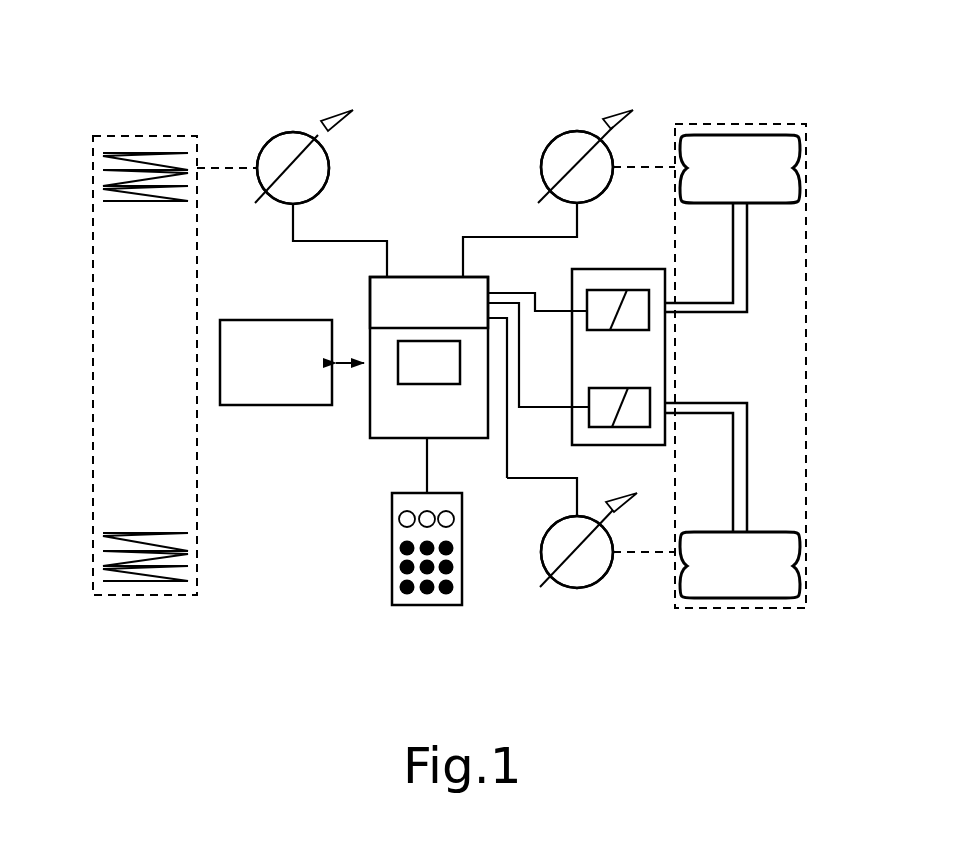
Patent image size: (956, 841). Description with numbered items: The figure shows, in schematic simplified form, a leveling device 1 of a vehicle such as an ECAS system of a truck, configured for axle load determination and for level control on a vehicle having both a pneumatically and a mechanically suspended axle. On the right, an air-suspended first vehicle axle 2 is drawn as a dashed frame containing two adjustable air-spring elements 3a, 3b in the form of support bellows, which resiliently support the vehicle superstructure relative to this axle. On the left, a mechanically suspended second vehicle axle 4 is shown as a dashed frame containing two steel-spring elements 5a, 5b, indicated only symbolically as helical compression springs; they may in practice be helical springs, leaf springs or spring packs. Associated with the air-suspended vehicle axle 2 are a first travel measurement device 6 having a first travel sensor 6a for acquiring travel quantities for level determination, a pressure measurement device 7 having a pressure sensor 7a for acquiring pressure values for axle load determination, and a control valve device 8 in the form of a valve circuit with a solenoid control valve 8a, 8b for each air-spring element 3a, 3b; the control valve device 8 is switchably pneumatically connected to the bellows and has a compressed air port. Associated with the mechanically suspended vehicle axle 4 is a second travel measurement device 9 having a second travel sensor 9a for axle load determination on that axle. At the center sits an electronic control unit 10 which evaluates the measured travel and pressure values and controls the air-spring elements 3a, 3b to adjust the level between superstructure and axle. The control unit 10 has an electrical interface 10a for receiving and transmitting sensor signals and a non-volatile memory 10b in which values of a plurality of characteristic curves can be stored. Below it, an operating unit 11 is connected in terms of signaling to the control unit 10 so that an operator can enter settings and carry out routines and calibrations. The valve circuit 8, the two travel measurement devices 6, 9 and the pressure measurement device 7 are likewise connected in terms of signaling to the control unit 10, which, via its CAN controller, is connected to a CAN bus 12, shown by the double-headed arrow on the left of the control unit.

The leveling device 1 is at (411, 82).
The first vehicle axle 2 is at (745, 620).
The air-spring element 3a is at (783, 133).
The air-spring element 3b is at (793, 597).
The second vehicle axle 4 is at (142, 608).
The steel-spring element 5a is at (118, 155).
The steel-spring element 5b is at (110, 583).
The first travel measurement device 6 is at (579, 129).
The first travel sensor 6a is at (547, 147).
The pressure measurement device 7 is at (591, 590).
The pressure sensor 7a is at (570, 587).
The control valve device 8 is at (667, 368).
The control valve 8a is at (638, 292).
The control valve 8b is at (637, 428).
The second travel measurement device 9 is at (294, 130).
The second travel sensor 9a is at (265, 138).
The electronic control unit 10 is at (370, 420).
The electrical interface 10a is at (449, 319).
The non-volatile memory 10b is at (450, 376).
The operating unit 11 is at (418, 608).
The CAN bus 12 is at (291, 377).